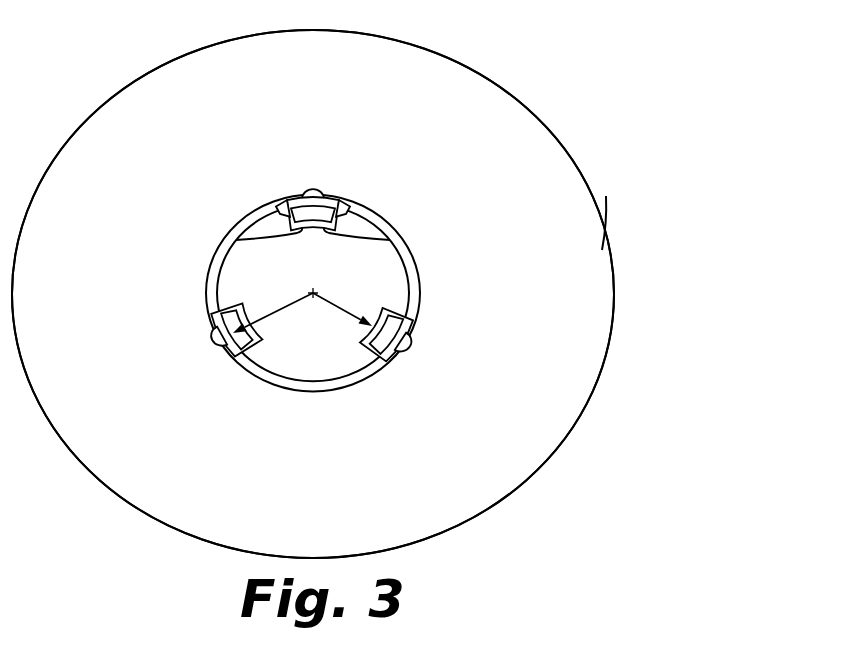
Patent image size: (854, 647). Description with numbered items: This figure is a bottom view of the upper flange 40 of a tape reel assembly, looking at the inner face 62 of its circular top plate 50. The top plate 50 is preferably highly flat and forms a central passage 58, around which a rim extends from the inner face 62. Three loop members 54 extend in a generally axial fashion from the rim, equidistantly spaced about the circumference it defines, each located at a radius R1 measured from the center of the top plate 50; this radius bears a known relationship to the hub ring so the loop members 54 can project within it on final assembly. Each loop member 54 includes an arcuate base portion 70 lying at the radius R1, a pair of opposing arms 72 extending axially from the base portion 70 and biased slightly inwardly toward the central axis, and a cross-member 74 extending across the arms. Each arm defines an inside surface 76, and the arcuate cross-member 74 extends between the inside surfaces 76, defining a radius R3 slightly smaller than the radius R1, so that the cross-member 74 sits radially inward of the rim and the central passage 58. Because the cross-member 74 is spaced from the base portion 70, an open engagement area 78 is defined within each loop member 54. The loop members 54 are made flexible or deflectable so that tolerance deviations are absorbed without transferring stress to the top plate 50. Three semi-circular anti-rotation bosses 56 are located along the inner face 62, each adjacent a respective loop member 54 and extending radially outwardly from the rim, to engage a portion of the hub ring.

The upper flange 40 is at (508, 45).
The top plate 50 is at (508, 118).
The inner face 62 is at (577, 228).
The central passage 58 is at (354, 382).
The base portion 70 is at (330, 206).
The opposing arms 72 is at (275, 208).
The cross-member 74 is at (233, 238).
The inside surface 76 is at (397, 238).
The loop member 54 is at (217, 299).
The open engagement area 78 is at (400, 325).
The anti-rotation boss 56 is at (212, 345).
The radius R1 is at (263, 300).
The radius R3 is at (337, 308).